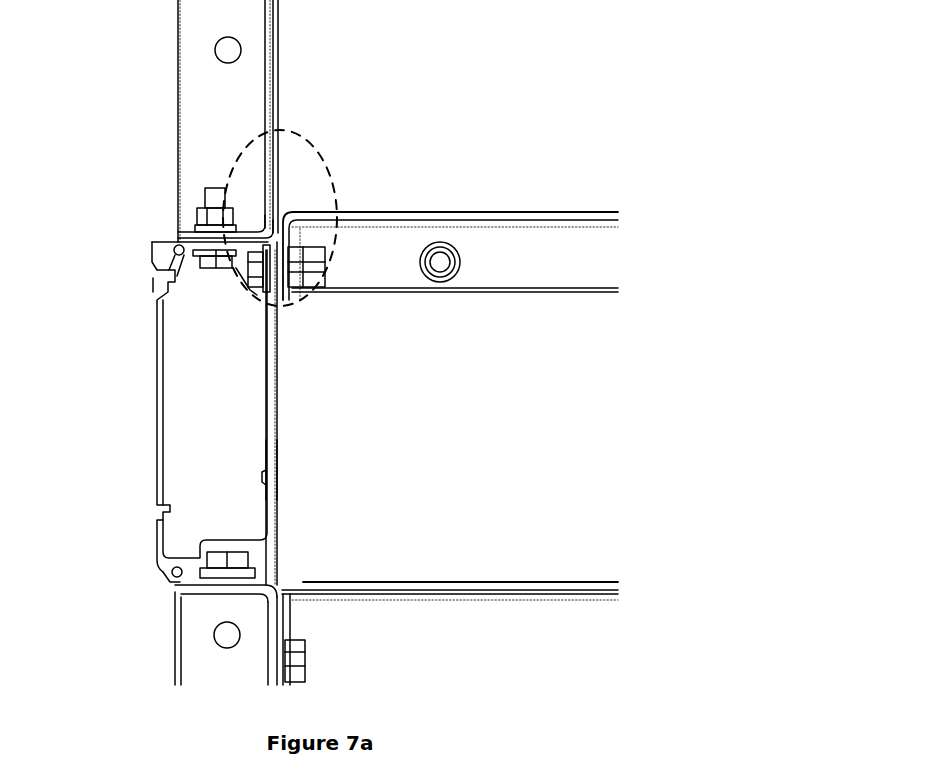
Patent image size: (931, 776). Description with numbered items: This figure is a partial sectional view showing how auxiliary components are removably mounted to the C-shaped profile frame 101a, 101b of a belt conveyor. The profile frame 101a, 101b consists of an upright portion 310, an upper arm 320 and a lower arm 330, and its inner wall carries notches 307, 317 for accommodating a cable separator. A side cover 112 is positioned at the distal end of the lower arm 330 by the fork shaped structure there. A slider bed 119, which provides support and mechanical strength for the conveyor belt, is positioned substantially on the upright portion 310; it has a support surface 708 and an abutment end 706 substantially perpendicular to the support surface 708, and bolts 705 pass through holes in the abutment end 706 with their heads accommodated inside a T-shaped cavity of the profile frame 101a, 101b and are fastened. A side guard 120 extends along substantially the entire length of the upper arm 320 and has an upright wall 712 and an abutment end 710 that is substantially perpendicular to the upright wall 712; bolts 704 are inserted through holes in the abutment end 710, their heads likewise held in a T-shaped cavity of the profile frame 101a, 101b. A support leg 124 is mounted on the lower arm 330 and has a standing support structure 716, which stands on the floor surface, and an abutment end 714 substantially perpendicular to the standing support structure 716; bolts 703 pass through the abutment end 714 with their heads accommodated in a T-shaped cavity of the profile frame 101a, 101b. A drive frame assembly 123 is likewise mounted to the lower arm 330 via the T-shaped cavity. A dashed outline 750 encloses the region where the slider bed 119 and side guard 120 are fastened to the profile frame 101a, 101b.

The side guard 120 is at (231, 121).
The upright wall 712 is at (272, 35).
The abutment end 710 is at (253, 228).
The bolts 704 is at (195, 212).
The detail region 750 is at (296, 299).
The side cover 112 is at (160, 407).
The upper arm 320 is at (167, 248).
The bolts 705 is at (243, 290).
The abutment ends 706 is at (282, 267).
The notch 317 is at (253, 295).
The support surface 708 is at (413, 212).
The slider bed 119 is at (348, 222).
The upright portion 310 is at (272, 423).
The profile frame 101a is at (272, 460).
The profile frame 101b is at (360, 495).
The notch 307 is at (262, 475).
The lower arm 330 is at (167, 565).
The abutment end 714 is at (237, 588).
The bolts 703 is at (173, 577).
The standing support structure 716 is at (273, 620).
The support leg 124 is at (218, 688).
The drive frame assembly 123 is at (358, 602).